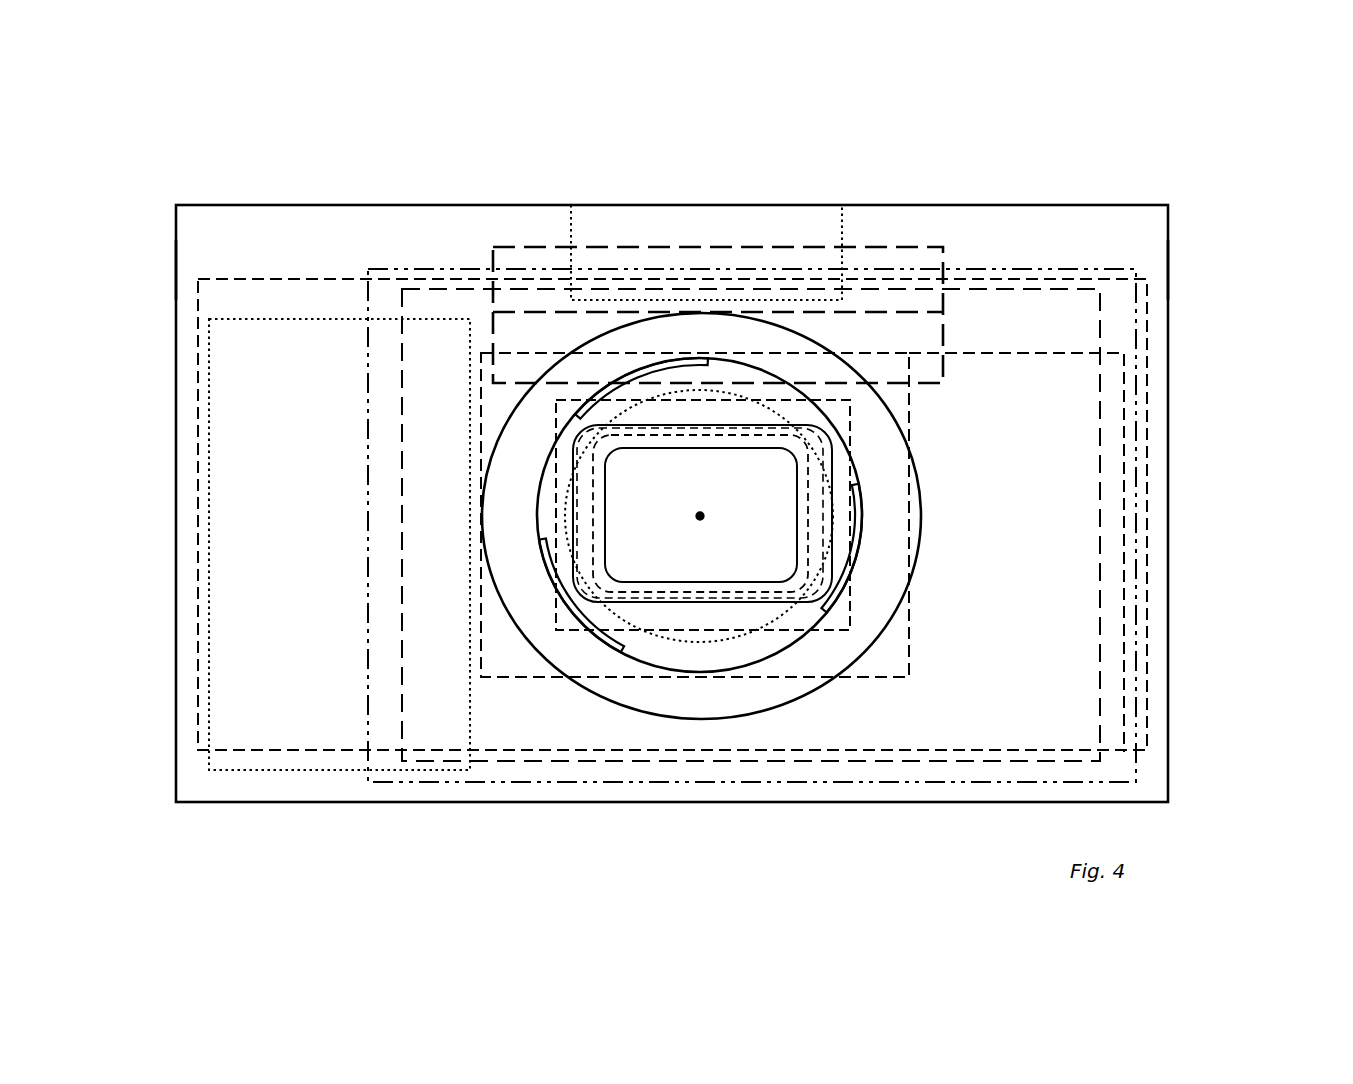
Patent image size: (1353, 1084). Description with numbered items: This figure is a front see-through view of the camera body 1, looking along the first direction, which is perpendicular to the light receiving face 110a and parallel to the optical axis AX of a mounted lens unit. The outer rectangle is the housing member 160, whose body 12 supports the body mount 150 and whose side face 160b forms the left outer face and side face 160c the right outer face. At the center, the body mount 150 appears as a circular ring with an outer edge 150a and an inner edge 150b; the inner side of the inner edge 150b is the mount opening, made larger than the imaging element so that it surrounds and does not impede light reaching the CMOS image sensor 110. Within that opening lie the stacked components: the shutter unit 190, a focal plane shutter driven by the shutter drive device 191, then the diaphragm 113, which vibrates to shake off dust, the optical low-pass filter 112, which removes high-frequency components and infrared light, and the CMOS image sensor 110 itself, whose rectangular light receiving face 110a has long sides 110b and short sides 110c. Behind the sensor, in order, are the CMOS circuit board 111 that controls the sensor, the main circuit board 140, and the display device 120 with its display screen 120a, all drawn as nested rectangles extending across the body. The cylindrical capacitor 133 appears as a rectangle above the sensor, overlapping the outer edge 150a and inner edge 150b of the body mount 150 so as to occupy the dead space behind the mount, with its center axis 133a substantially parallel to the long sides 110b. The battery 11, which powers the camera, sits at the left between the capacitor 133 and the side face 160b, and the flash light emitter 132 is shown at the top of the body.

The camera body 1 is at (656, 126).
The battery 11 is at (282, 357).
The body 12 is at (776, 650).
The CMOS image sensor 110 is at (815, 502).
The light receiving face 110a is at (605, 388).
The long sides 110b is at (668, 428).
The short sides 110c is at (568, 497).
The CMOS circuit board 111 is at (852, 430).
The optical low-pass filter 112 is at (810, 540).
The diaphragm 113 is at (655, 560).
The display device 120 is at (368, 782).
The display screen 120a is at (1037, 290).
The flash light emitter 132 is at (650, 232).
The capacitor 133 is at (875, 255).
The center axis 133a is at (883, 310).
The main circuit board 140 is at (233, 300).
The body mount 150 is at (530, 600).
The outer edge 150a is at (682, 308).
The inner edge 150b is at (753, 367).
The housing member 160 is at (1183, 312).
The side face 160b is at (175, 262).
The side face 160c is at (1175, 262).
The shutter unit 190 is at (878, 652).
The shutter drive device 191 is at (1068, 663).
The optical axis AX is at (697, 513).